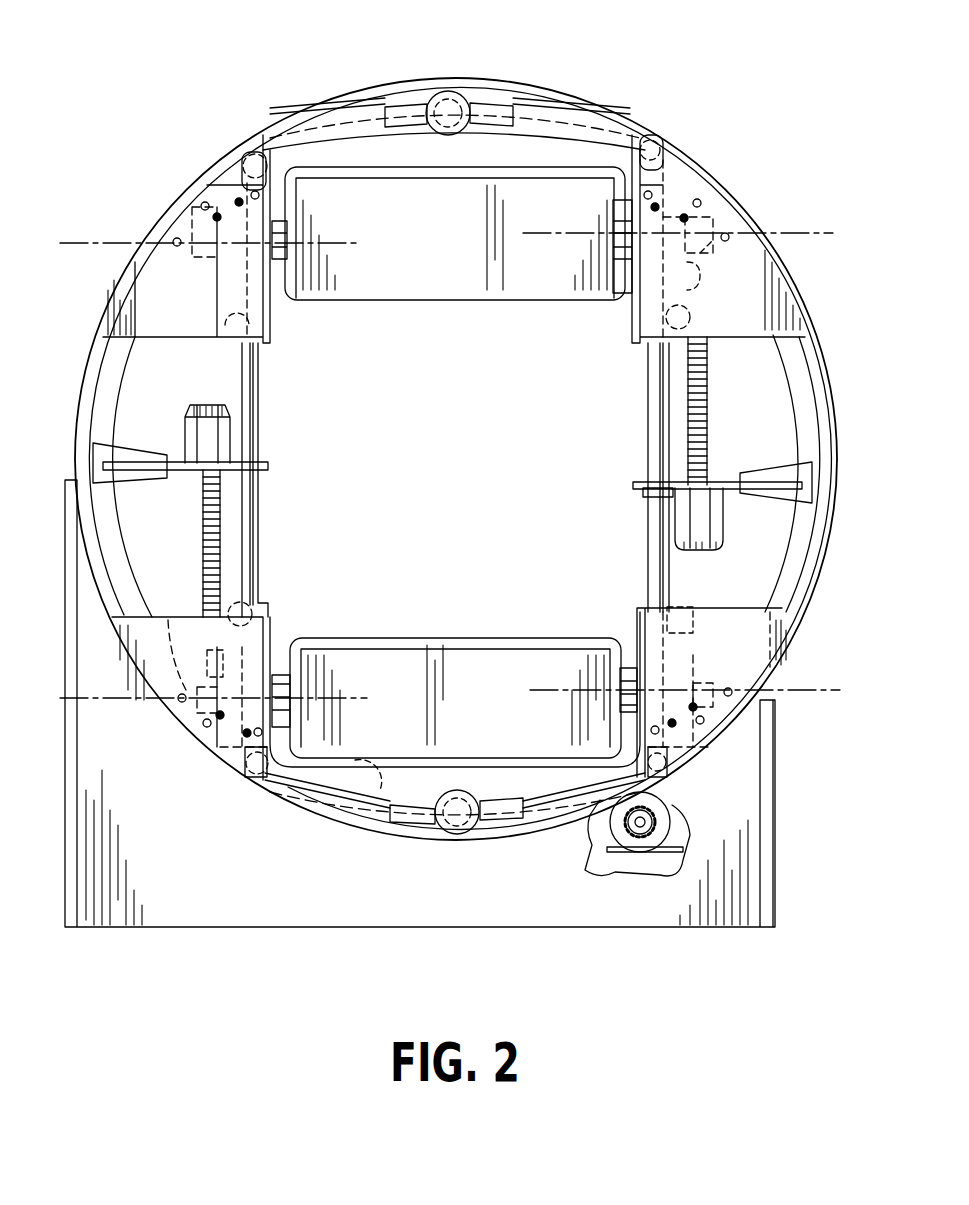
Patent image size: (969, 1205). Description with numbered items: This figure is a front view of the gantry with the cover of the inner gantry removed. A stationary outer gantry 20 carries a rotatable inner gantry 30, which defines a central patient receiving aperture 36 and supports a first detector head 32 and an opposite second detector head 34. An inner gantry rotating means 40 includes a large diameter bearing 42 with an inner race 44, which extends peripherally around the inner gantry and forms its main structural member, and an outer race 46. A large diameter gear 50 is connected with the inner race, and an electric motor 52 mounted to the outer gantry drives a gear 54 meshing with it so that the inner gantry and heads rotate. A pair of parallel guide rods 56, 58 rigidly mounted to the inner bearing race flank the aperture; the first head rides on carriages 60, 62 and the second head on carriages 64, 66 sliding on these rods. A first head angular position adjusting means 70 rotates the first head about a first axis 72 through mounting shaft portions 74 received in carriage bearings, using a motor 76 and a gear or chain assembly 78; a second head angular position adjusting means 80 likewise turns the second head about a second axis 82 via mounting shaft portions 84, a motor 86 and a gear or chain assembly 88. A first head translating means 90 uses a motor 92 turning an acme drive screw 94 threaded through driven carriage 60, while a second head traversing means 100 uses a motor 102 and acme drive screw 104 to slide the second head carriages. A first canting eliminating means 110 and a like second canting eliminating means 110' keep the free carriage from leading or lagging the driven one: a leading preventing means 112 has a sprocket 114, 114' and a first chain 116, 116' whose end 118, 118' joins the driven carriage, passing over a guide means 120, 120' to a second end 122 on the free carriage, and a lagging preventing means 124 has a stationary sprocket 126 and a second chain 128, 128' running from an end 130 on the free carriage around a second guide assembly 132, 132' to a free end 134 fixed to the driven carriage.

The outer gantry 20 is at (209, 905).
The inner gantry 30 is at (722, 332).
The first detector head 32 is at (432, 212).
The second detector head 34 is at (472, 682).
The patient receiving aperture 36 is at (457, 507).
The inner gantry rotating means 40 is at (830, 353).
The large diameter bearing 42 is at (810, 515).
The inner race 44 is at (798, 535).
The outer race 46 is at (808, 585).
The large diameter gear 50 is at (592, 853).
The electric motor 52 is at (673, 800).
The gear 54 is at (647, 830).
The guide rod 56 is at (655, 437).
The guide rod 58 is at (257, 372).
The carriage 60 is at (735, 194).
The carriage 62 is at (191, 208).
The carriage 64 is at (196, 712).
The carriage 66 is at (713, 705).
The first detector head angular position adjusting means 70 is at (625, 298).
The first axis 72 is at (813, 233).
The mounting shaft portions 74 is at (282, 233).
The motor 76 is at (700, 285).
The gear or chain assembly 78 is at (630, 200).
The second detector head angular position adjusting means 80 is at (280, 607).
The second axis 82 is at (797, 682).
The mounting shaft portions 84 is at (283, 700).
The motor 86 is at (170, 639).
The gear or chain assembly 88 is at (223, 655).
The first head translating means 90 is at (705, 556).
The motor 92 is at (710, 518).
The acme drive screw 94 is at (708, 373).
The second head traversing means 100 is at (222, 393).
The motor 102 is at (206, 405).
The acme drive screw 104 is at (203, 497).
The first canting eliminating means 110 is at (454, 103).
The second canting eliminating means 110' is at (455, 739).
The leading preventing means 112 is at (655, 205).
The sprocket or pulley means 114 is at (634, 333).
The sprocket or pulley means 114' is at (276, 587).
The first chain 116 is at (539, 175).
The first chain 116' is at (447, 807).
The end 118 is at (699, 177).
The end 118' is at (421, 748).
The guide means 120 is at (516, 91).
The guide means 120' is at (432, 841).
The second end 122 is at (239, 200).
The lagging preventing means 124 is at (213, 302).
The stationary sprocket or pulley means 126 is at (250, 320).
The second chain 128 is at (190, 260).
The second chain 128' is at (350, 761).
The end 130 is at (217, 214).
The second guide assembly 132 is at (404, 86).
The second guide assembly 132' is at (401, 856).
The free end 134 is at (684, 216).